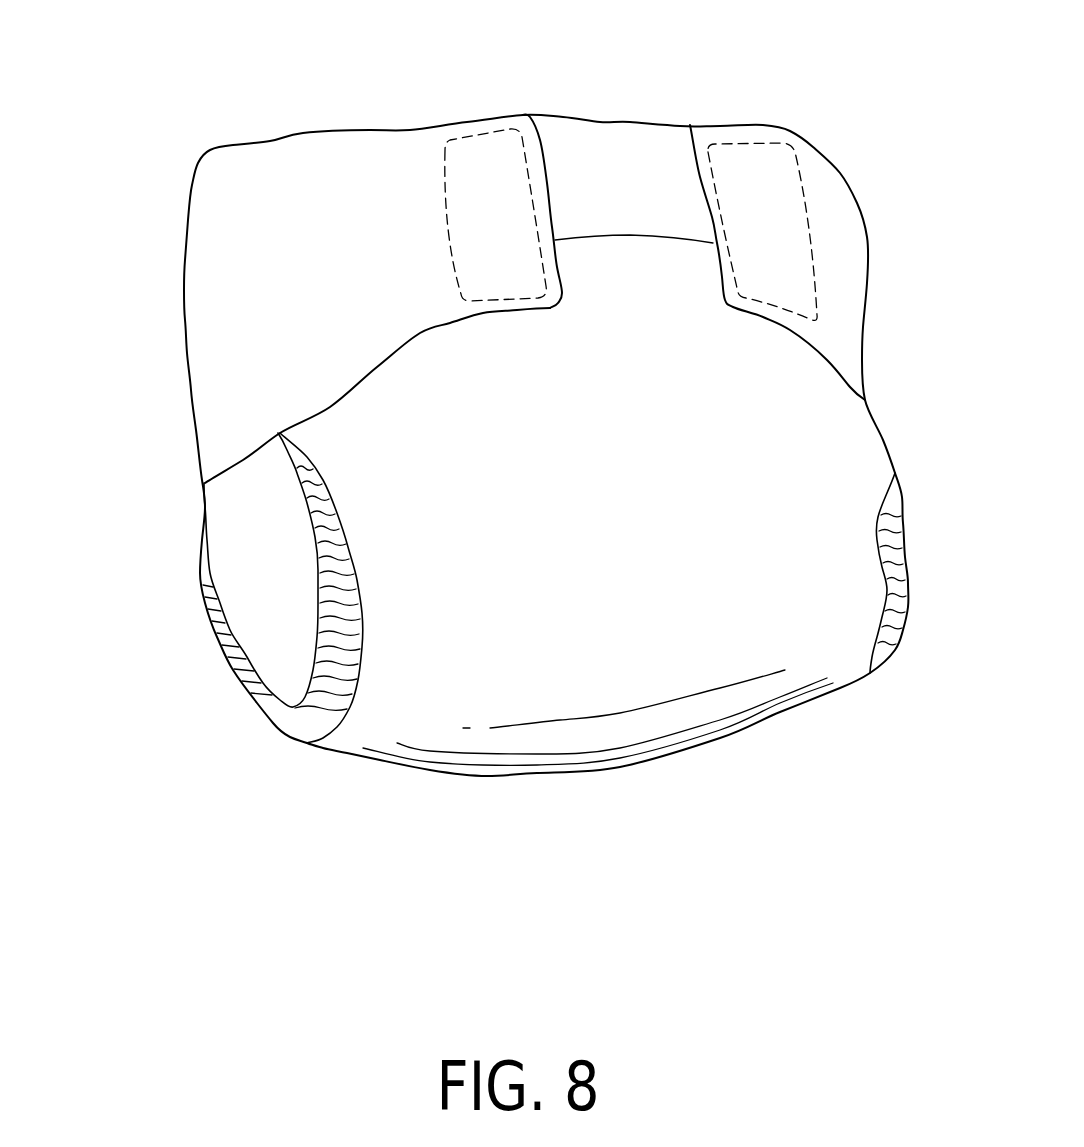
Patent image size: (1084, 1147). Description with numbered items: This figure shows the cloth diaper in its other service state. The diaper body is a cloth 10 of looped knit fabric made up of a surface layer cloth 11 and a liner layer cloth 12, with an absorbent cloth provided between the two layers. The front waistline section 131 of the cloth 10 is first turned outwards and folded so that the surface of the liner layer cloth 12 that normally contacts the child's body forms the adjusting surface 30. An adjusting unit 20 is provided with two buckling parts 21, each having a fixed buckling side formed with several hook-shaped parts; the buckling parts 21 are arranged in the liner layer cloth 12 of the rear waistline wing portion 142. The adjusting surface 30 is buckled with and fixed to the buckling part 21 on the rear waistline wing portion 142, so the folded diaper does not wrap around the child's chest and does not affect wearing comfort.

The cloth 10 is at (438, 773).
The surface layer cloth 11 is at (750, 663).
The liner layer cloth 12 is at (262, 662).
The adjusting unit 20 is at (438, 168).
The buckling part 21 is at (482, 150).
The adjusting surface 30 is at (572, 187).
The front waistline section 131 is at (623, 233).
The rear waistline wing portion 142 is at (238, 225).